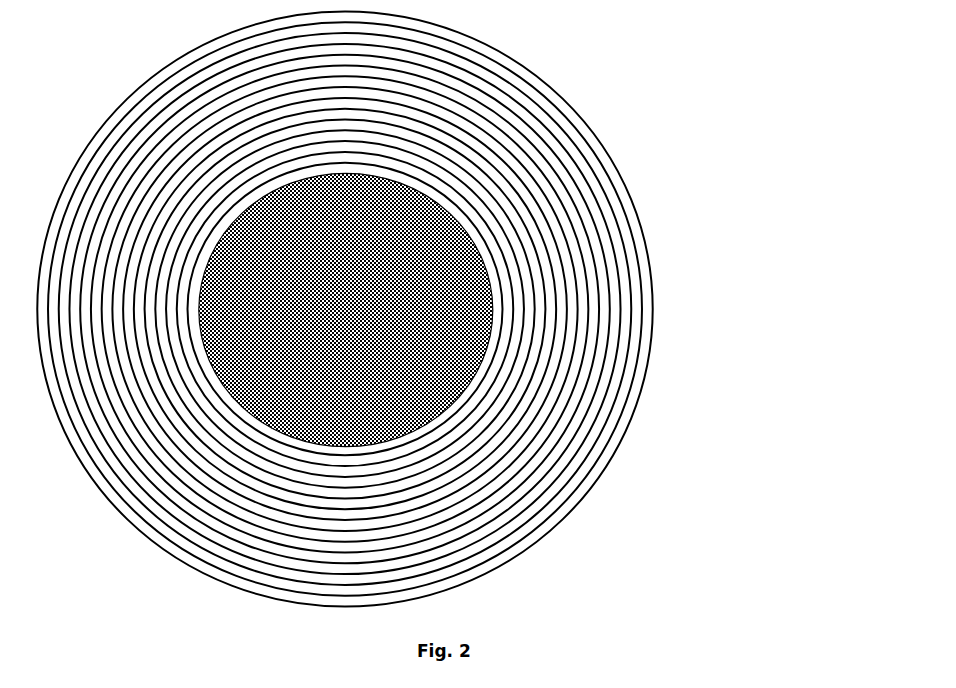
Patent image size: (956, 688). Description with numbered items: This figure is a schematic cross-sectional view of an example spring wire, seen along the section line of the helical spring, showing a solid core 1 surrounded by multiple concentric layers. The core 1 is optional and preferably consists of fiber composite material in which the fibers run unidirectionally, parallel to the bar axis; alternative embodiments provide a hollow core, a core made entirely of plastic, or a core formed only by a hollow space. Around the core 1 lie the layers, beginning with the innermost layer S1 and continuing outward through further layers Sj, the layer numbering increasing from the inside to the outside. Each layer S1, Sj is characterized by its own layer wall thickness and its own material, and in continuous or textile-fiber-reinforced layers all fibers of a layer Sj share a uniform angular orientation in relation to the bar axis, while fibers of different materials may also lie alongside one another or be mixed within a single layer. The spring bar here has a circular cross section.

The core 1 is at (360, 387).
The layer 1 S1 is at (437, 200).
The layer j Sj is at (543, 249).